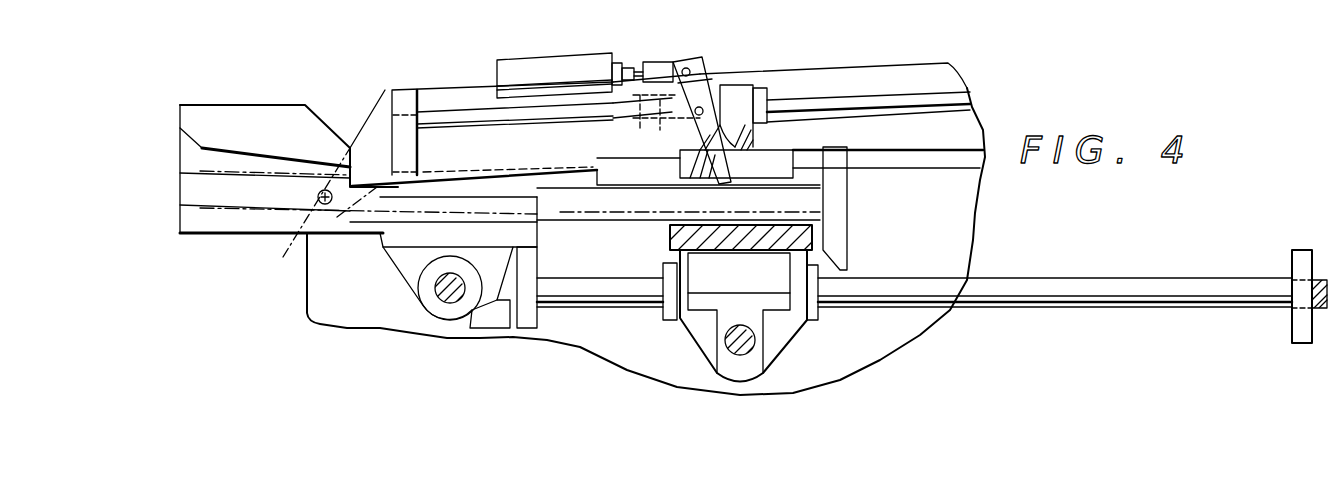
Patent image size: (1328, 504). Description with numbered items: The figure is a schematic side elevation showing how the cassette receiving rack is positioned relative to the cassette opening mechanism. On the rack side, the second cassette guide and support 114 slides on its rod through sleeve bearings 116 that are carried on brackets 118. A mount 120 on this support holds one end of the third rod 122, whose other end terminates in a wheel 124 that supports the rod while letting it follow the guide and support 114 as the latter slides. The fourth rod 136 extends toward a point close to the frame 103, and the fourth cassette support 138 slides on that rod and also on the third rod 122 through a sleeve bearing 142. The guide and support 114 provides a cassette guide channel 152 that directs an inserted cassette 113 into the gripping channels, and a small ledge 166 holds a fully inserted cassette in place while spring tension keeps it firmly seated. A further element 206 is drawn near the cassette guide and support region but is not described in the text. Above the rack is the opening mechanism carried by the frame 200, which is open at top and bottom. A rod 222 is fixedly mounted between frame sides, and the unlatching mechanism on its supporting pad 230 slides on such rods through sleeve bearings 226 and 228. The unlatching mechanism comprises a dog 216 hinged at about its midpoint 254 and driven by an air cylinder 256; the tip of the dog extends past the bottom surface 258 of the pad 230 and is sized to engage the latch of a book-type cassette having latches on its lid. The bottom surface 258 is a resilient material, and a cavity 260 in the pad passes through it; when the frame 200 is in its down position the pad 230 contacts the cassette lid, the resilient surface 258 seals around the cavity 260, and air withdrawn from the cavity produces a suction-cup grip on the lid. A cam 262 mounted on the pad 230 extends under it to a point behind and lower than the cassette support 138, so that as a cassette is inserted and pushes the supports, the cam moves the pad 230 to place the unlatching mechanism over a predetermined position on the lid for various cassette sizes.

The frame 103 is at (377, 303).
The cassette 113 is at (166, 170).
The second cassette guide and support 114 is at (273, 92).
The sleeve bearings 116 is at (448, 312).
The brackets 118 is at (412, 288).
The mount 120 is at (522, 323).
The third rod 122 is at (1008, 280).
The wheel 124 is at (1300, 262).
The fourth rod 136 is at (725, 340).
The fourth cassette support 138 is at (672, 240).
The sleeve bearing 142 is at (818, 322).
The cassette guide channel 152 is at (203, 160).
The ledge 166 is at (383, 188).
The frame 200 is at (972, 92).
The pivot axis 206 is at (306, 211).
The dog 216 is at (727, 180).
The rod 222 is at (873, 93).
The sleeve bearing 226 is at (763, 92).
The sleeve bearing 228 is at (622, 130).
The supporting pad 230 is at (793, 152).
The midpoint 254 is at (702, 98).
The air cylinder 256 is at (530, 62).
The bottom surface 258 is at (637, 188).
The cavity 260 is at (758, 142).
The cam 262 is at (845, 212).